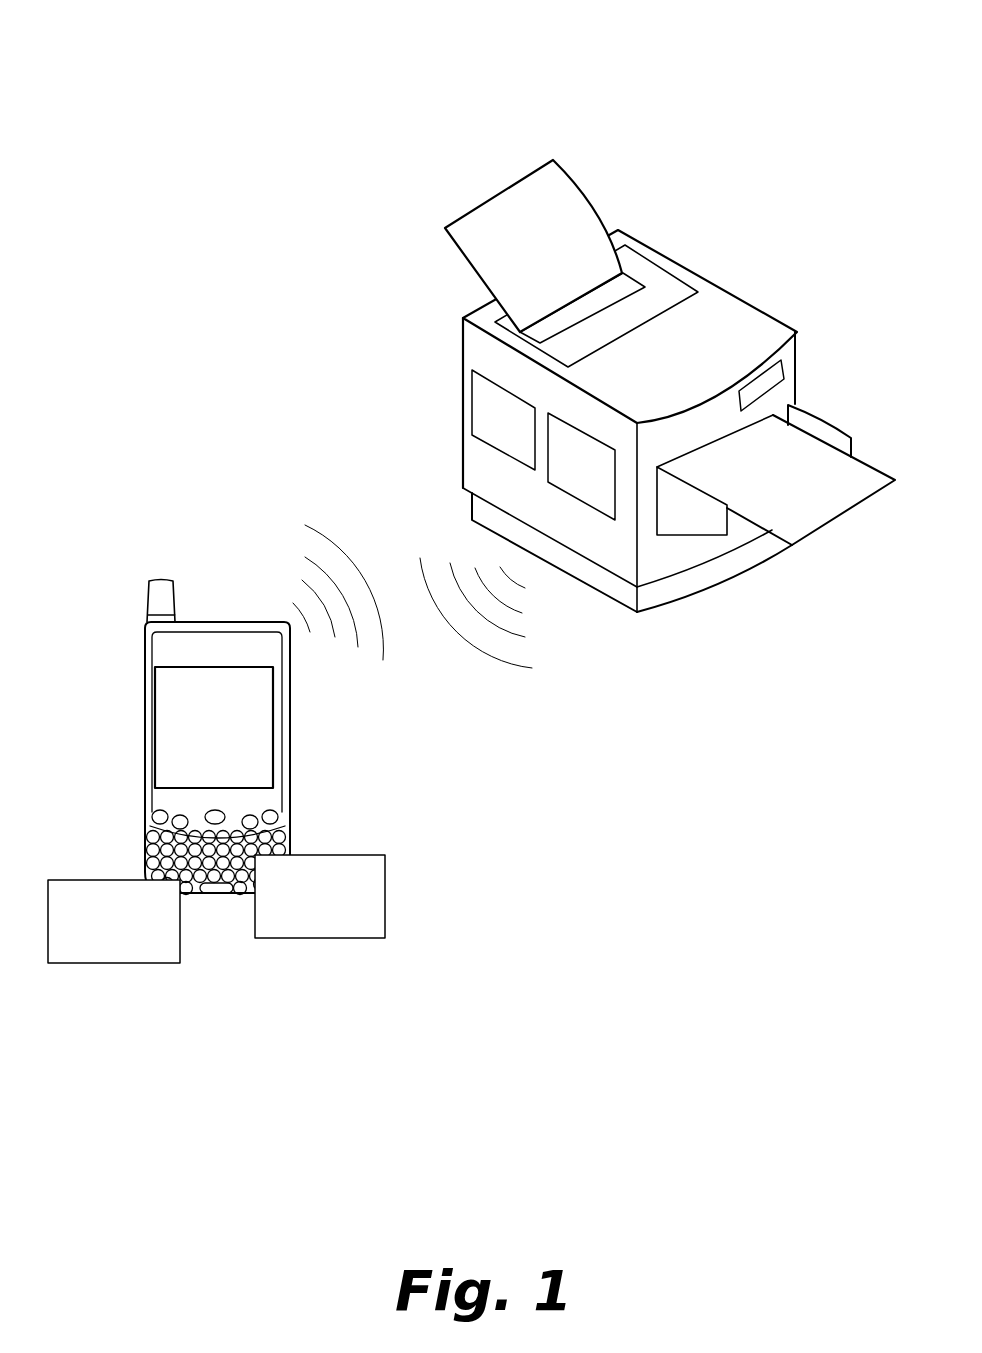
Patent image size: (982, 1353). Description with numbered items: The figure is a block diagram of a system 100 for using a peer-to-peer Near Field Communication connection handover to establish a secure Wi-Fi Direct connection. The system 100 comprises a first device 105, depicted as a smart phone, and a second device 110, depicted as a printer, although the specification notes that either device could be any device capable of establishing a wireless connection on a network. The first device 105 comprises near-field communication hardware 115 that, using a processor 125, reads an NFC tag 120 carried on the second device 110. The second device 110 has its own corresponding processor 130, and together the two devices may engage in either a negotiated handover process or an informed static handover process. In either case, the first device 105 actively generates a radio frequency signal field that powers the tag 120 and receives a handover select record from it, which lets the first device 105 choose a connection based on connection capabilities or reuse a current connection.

The system 100 is at (232, 88).
The first device 105 is at (172, 550).
The second device 110 is at (425, 340).
The near-field communication hardware 115 is at (299, 924).
The NFC tag 120 is at (600, 485).
The processor 125 is at (93, 947).
The processor 130 is at (492, 425).